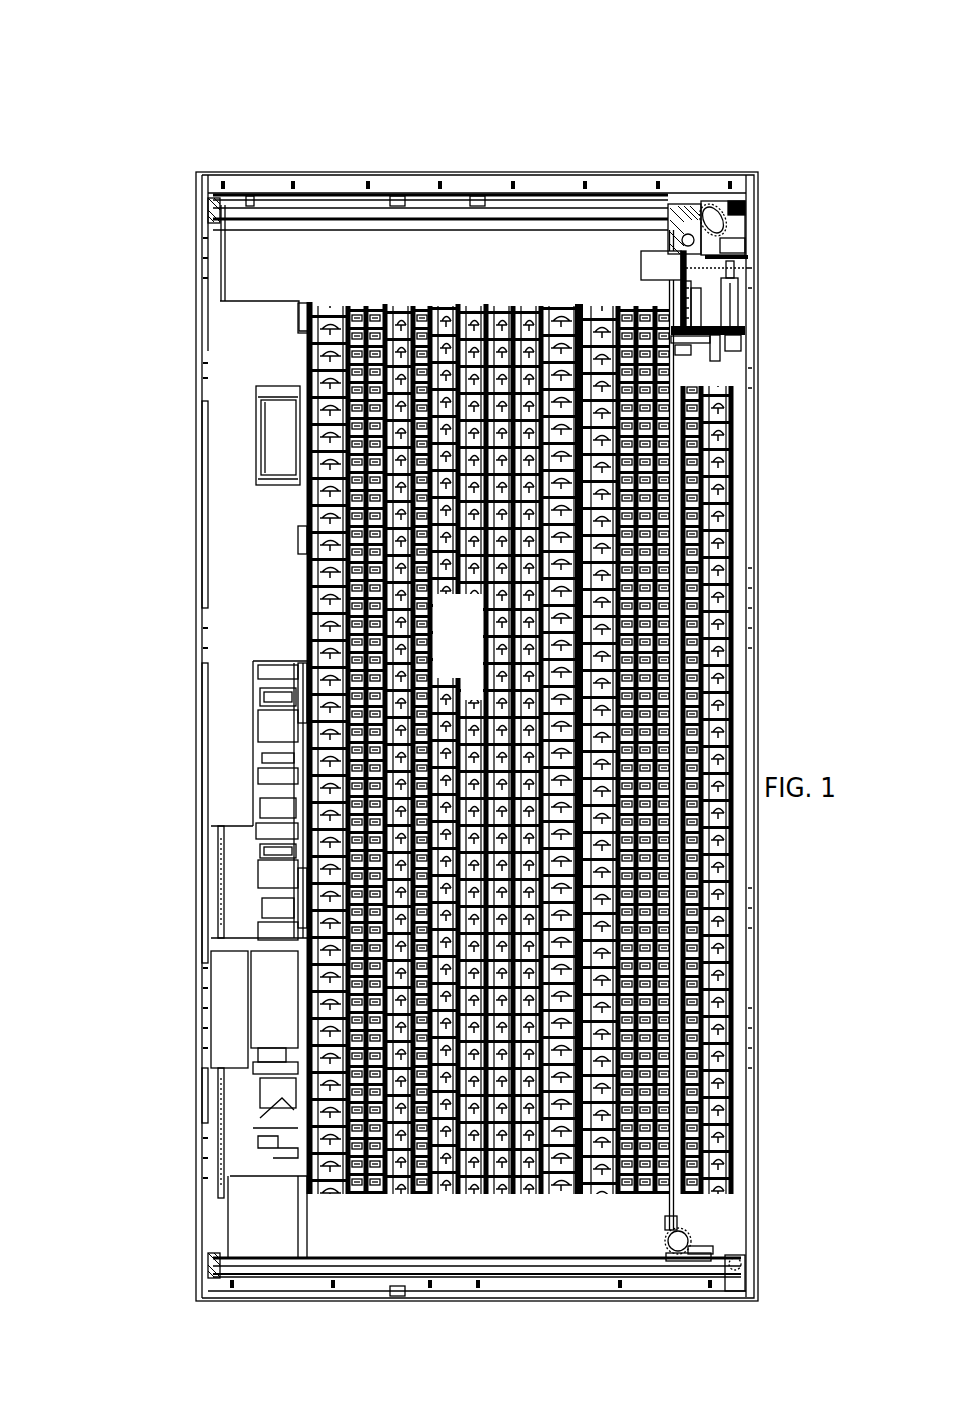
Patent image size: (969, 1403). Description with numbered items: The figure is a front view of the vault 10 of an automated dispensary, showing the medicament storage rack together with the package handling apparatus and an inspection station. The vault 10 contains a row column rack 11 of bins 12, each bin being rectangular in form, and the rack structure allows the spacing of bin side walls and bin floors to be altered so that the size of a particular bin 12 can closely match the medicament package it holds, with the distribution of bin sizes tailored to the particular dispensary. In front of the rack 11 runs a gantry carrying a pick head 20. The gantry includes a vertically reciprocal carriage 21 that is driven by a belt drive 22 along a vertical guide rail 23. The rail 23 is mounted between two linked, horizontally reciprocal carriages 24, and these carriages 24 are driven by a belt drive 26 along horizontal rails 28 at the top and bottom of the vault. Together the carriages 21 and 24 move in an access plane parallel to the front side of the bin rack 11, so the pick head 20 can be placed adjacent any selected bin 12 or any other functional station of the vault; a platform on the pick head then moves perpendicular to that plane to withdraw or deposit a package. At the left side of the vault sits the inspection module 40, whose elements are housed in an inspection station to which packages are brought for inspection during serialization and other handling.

The vault 10 is at (122, 880).
The row column rack 11 is at (465, 640).
The bins 12 is at (345, 490).
The pick head 20 is at (727, 312).
The vertically reciprocal carriage 21 is at (680, 290).
The belt drive 22 is at (662, 283).
The vertical guide rail 23 is at (663, 360).
The horizontally reciprocal carriages 24 is at (666, 200).
The belt drive 26 is at (280, 190).
The horizontal rails 28 is at (295, 215).
The inspection module 40 is at (222, 435).